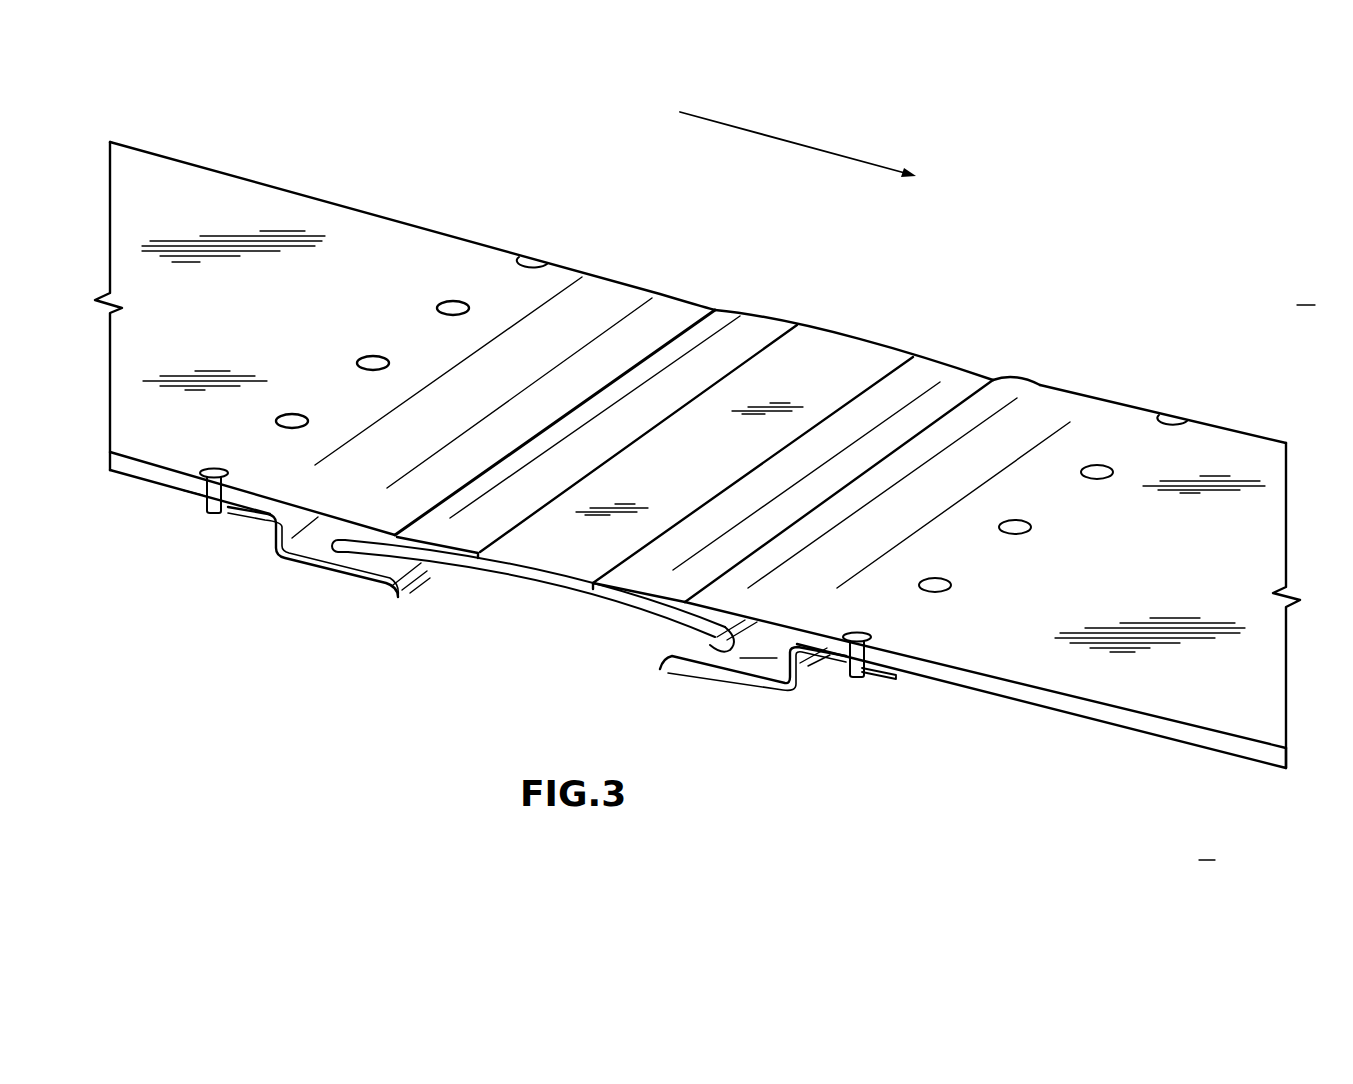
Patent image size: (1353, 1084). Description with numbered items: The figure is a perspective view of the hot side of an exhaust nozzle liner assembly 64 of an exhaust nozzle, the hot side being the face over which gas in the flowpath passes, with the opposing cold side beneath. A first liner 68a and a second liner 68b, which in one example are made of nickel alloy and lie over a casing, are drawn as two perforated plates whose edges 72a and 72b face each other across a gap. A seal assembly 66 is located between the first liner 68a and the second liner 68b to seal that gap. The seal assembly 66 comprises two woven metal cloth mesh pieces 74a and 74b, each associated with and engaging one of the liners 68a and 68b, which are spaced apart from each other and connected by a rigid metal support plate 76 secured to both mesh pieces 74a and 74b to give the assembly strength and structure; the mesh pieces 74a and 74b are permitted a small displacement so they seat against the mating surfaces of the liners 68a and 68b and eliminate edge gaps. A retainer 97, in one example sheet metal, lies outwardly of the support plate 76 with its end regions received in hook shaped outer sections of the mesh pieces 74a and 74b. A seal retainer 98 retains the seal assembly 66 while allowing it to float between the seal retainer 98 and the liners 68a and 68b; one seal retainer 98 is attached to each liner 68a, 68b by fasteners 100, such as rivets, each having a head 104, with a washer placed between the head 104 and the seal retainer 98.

The exhaust nozzle liner assembly 64 is at (1197, 238).
The seal assembly 66 is at (970, 304).
The first liner 68a is at (333, 217).
The second liner 68b is at (1222, 444).
The edge of first liner 72a is at (712, 310).
The edge of second liner 72b is at (996, 378).
The woven metal cloth mesh piece 74a is at (747, 326).
The woven metal cloth mesh piece 74b is at (927, 378).
The support plate 76 is at (842, 350).
The retainer 97 is at (632, 604).
The seal retainer 98 is at (311, 547).
The fastener 100 is at (213, 512).
The head of the fastener 104 is at (877, 675).